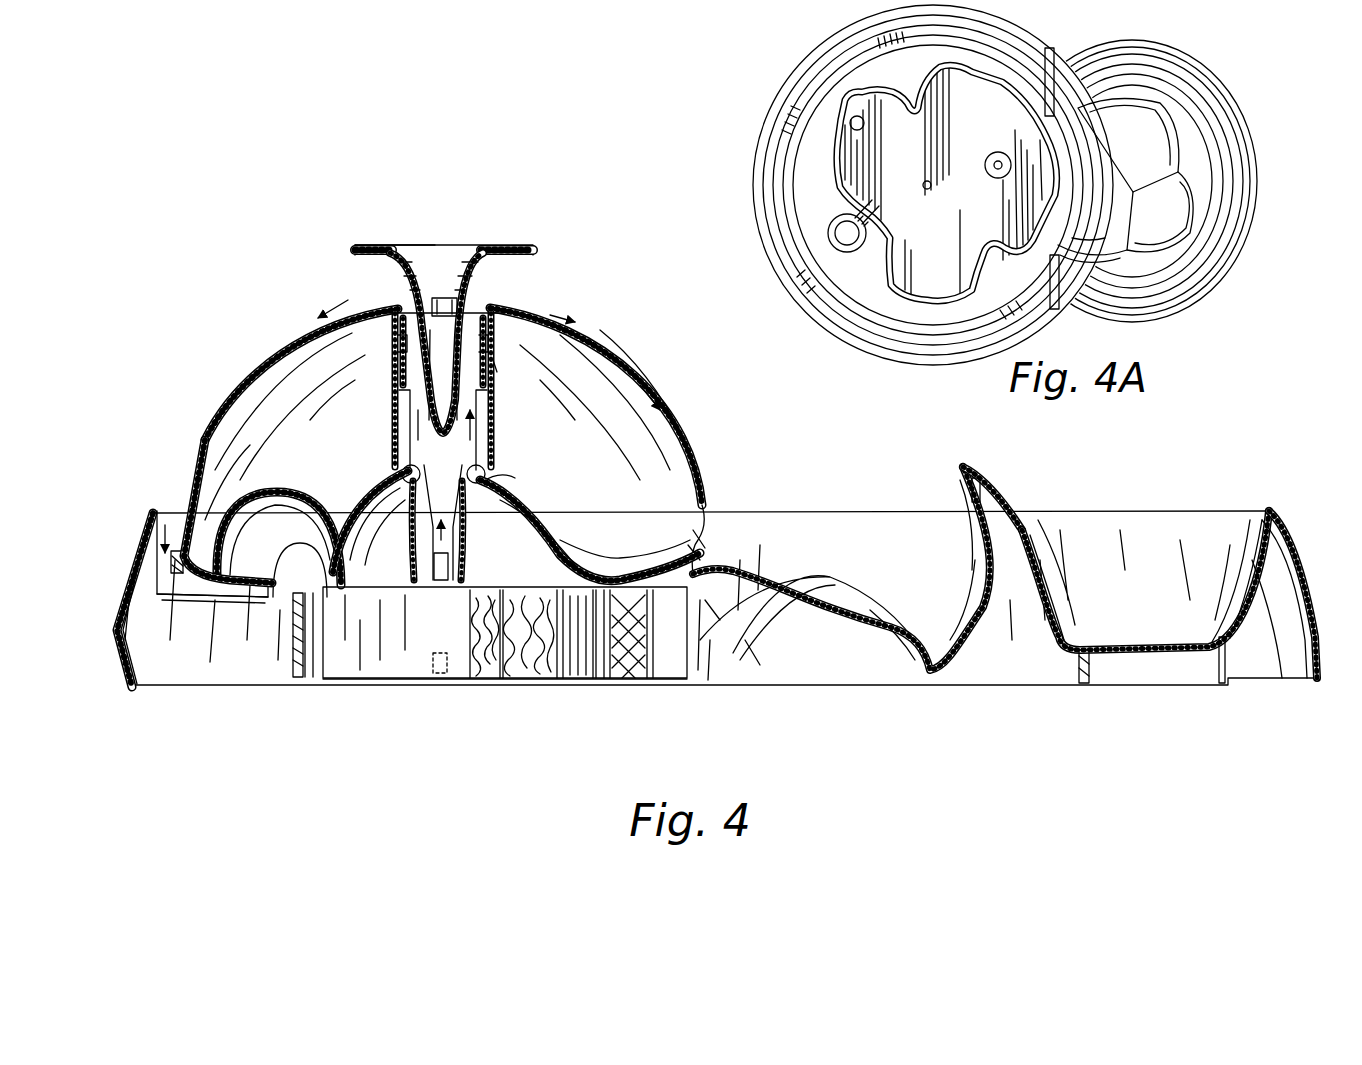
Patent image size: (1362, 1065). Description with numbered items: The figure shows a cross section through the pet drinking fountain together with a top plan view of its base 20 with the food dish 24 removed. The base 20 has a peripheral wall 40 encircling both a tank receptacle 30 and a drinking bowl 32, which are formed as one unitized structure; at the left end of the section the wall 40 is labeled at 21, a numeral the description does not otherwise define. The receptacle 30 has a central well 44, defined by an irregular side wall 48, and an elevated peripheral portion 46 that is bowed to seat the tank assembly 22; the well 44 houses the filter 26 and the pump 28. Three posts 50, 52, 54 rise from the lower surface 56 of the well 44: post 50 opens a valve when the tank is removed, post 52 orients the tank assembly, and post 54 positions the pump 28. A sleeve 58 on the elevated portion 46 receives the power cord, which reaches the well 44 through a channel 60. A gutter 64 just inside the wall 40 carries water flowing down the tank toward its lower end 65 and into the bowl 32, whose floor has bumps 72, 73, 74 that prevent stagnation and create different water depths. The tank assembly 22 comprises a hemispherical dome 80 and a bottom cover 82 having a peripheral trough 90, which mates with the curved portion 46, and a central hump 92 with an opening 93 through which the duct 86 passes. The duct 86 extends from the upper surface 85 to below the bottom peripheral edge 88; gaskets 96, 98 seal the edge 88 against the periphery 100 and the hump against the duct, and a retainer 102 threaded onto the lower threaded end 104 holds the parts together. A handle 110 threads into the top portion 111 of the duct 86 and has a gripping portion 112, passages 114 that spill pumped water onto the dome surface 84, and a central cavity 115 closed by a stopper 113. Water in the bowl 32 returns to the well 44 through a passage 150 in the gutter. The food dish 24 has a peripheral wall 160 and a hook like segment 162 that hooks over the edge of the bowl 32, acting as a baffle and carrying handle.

In FIG. 4, the base 20 is at (703, 697).
In FIG. 4A, the base 20 is at (758, 121).
In FIG. 4, the left end wall 21 is at (153, 514).
In FIG. 4, the tank assembly 22 is at (690, 428).
In FIG. 4, the food dish 24 is at (1120, 508).
In FIG. 4, the filter 26 is at (487, 662).
In FIG. 4, the pump 28 is at (406, 640).
In FIG. 4, the tank receptacle 30 is at (387, 692).
In FIG. 4, the drinking bowl 32 is at (844, 510).
In FIG. 4A, the drinking bowl 32 is at (1196, 58).
In FIG. 4, the peripheral wall 40 is at (125, 613).
In FIG. 4A, the peripheral wall 40 is at (762, 170).
In FIG. 4, the central well 44 is at (314, 648).
In FIG. 4A, the central well 44 is at (921, 300).
In FIG. 4, the elevated peripheral portion 46 is at (263, 596).
In FIG. 4, the irregular side wall 48 is at (295, 652).
In FIG. 4A, the irregular side wall 48 is at (897, 237).
In FIG. 4A, the post 50 is at (863, 129).
In FIG. 4, the post 52 is at (579, 662).
In FIG. 4A, the post 52 is at (999, 152).
In FIG. 4, the post 54 is at (425, 684).
In FIG. 4A, the post 54 is at (932, 187).
In FIG. 4, the lower surface 56 is at (598, 642).
In FIG. 4A, the lower surface 56 is at (982, 166).
In FIG. 4A, the sleeve 58 is at (828, 236).
In FIG. 4A, the channel 60 is at (860, 214).
In FIG. 4, the gutter 64 is at (165, 593).
In FIG. 4A, the gutter 64 is at (1008, 68).
In FIG. 4A, the gutter lower end 65 is at (1074, 100).
In FIG. 4, the bump 72 is at (758, 573).
In FIG. 4A, the bump 72 is at (1108, 247).
In FIG. 4, the bump 73 is at (852, 584).
In FIG. 4A, the bump 73 is at (1144, 133).
In FIG. 4A, the bump 74 is at (1178, 227).
In FIG. 4, the dome 80 is at (617, 352).
In FIG. 4, the bottom cover 82 is at (548, 526).
In FIG. 4, the surface 84 is at (257, 372).
In FIG. 4, the upper surface 85 is at (330, 304).
In FIG. 4, the duct 86 is at (390, 436).
In FIG. 4, the bottom peripheral edge 88 is at (176, 572).
In FIG. 4, the peripheral trough 90 is at (695, 492).
In FIG. 4, the central hump 92 is at (531, 503).
In FIG. 4, the opening 93 is at (402, 470).
In FIG. 4, the gasket 96 is at (713, 540).
In FIG. 4, the gasket 98 is at (486, 481).
In FIG. 4, the periphery 100 is at (197, 478).
In FIG. 4, the retainer 102 is at (522, 562).
In FIG. 4, the lower threaded end 104 is at (450, 500).
In FIG. 4, the handle 110 is at (535, 243).
In FIG. 4, the top portion 111 is at (497, 366).
In FIG. 4, the gripping portion 112 is at (357, 243).
In FIG. 4, the stopper 113 is at (443, 298).
In FIG. 4, the passages 114 is at (385, 305).
In FIG. 4, the central cavity 115 is at (470, 308).
In FIG. 4, the passage 150 is at (721, 562).
In FIG. 4, the peripheral wall 160 is at (1296, 556).
In FIG. 4, the hook like segment 162 is at (991, 480).